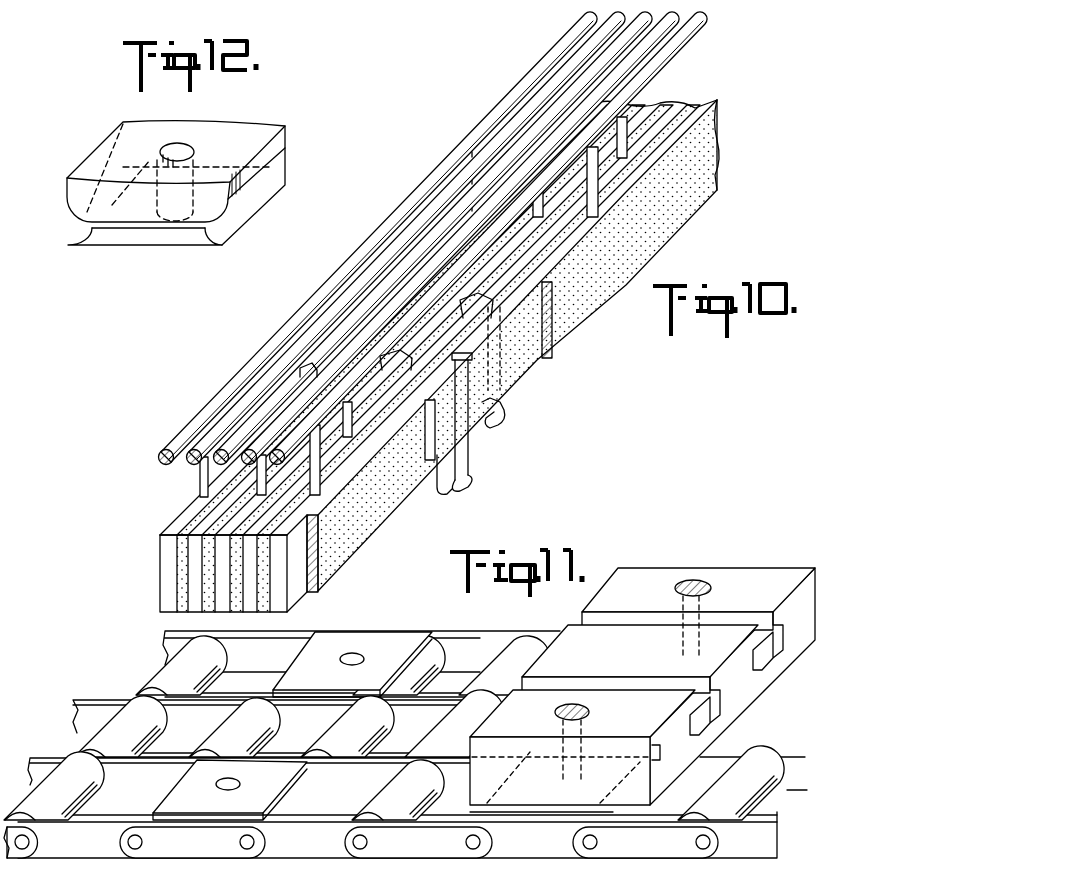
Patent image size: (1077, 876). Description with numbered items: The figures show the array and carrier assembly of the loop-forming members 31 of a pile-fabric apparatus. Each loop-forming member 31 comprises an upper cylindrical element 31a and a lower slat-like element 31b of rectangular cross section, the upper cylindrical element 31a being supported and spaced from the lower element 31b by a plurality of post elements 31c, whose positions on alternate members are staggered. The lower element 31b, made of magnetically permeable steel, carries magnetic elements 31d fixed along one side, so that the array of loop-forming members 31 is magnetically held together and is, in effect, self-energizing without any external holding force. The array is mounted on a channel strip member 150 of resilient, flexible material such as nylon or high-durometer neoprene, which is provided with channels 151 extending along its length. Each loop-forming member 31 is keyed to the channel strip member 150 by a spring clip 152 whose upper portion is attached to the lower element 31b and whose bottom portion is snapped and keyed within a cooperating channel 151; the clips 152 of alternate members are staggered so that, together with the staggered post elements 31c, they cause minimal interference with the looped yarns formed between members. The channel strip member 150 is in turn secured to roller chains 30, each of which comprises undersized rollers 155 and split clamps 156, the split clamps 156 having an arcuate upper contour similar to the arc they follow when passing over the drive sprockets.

In FIG. 11, the roller chain 30 is at (314, 838).
In FIG. 10, the loop-forming member 31 is at (552, 50).
In FIG. 10, the upper cylindrical element 31a is at (160, 461).
In FIG. 10, the lower slat-like element 31b is at (158, 580).
In FIG. 10, the post element 31c is at (199, 482).
In FIG. 10, the magnetic element 31d is at (180, 605).
In FIG. 11, the channel strip member 150 is at (770, 574).
In FIG. 11, the channel 151 is at (683, 580).
In FIG. 10, the spring clip 152 is at (462, 449).
In FIG. 11, the undersized roller 155 is at (311, 782).
In FIG. 12, the split clamp 156 is at (262, 128).
In FIG. 11, the split clamp 156 is at (183, 783).